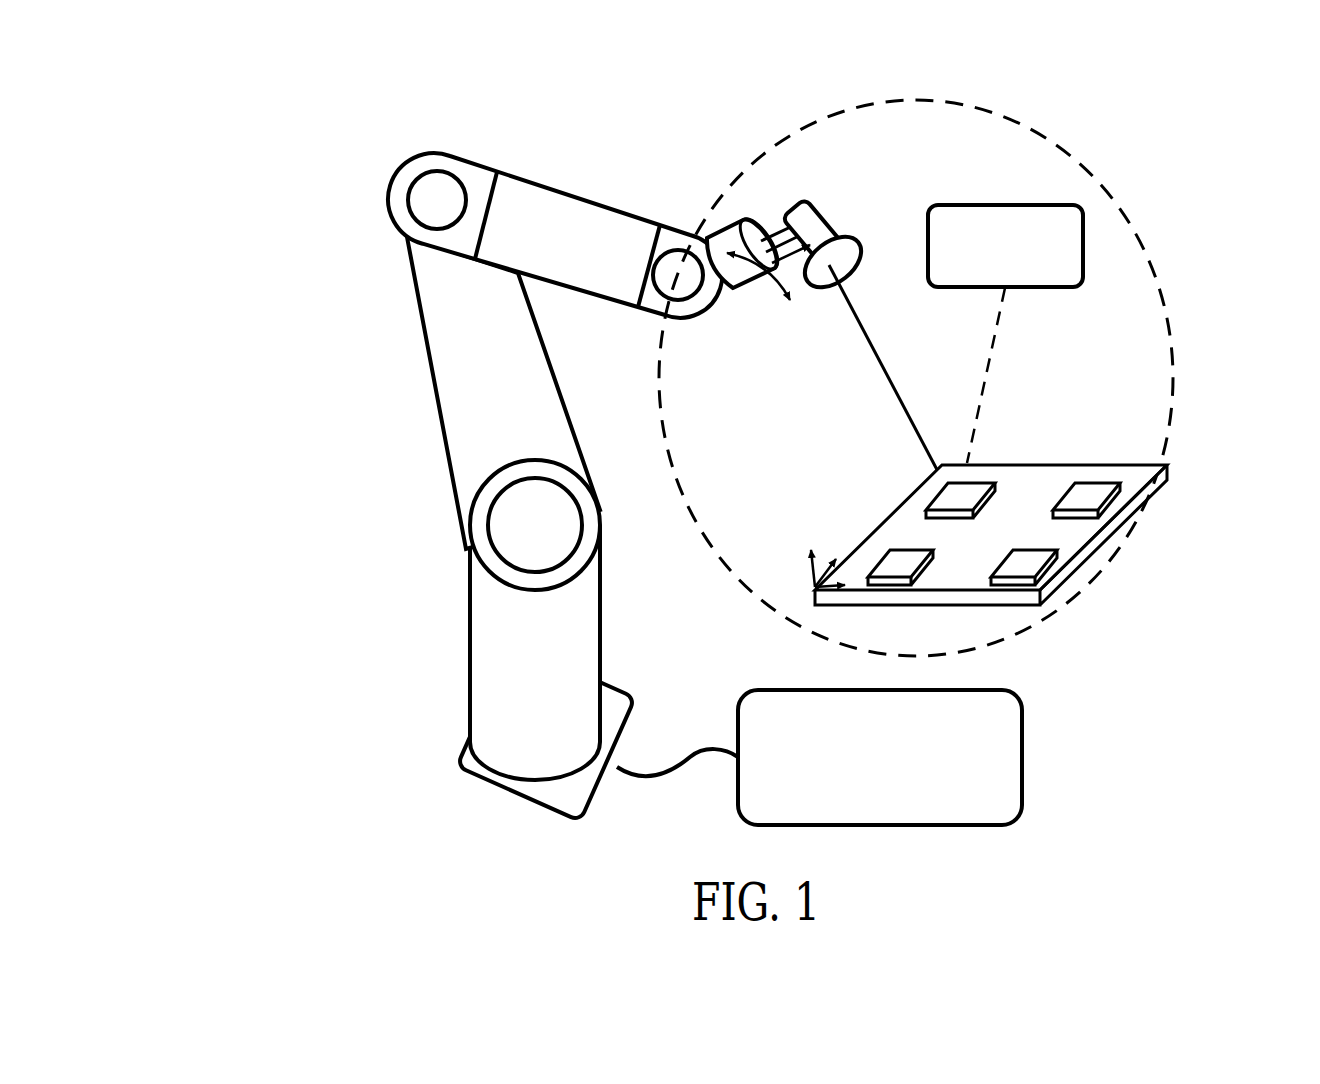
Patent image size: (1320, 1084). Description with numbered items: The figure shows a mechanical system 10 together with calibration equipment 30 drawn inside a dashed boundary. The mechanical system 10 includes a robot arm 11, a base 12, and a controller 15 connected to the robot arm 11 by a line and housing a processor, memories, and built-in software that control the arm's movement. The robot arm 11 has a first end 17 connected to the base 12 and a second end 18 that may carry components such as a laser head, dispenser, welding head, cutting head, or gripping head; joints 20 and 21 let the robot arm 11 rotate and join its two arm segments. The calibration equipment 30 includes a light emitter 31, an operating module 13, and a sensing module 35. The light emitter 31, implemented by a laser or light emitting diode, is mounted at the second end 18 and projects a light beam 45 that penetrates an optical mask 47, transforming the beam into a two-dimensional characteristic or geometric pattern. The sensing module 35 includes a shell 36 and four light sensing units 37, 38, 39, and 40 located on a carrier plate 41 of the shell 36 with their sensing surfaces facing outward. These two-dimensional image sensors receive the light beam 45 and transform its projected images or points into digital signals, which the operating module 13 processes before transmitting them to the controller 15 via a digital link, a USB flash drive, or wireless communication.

The mechanical system 10 is at (198, 113).
The robot arm 11 is at (412, 399).
The base 12 is at (463, 765).
The operating module 13 is at (1083, 247).
The controller 15 is at (1022, 757).
The first end 17 is at (517, 720).
The second end 18 is at (683, 290).
The joint 20 is at (518, 530).
The joint 21 is at (433, 200).
The calibration equipment 30 is at (1033, 154).
The light emitter 31 is at (850, 197).
The sensing module 35 is at (1033, 445).
The shell 36 is at (1135, 472).
The light sensing unit 37 is at (1027, 563).
The light sensing unit 38 is at (1093, 492).
The light sensing unit 39 is at (943, 503).
The light sensing unit 40 is at (893, 567).
The carrier plate 41 is at (998, 555).
The light beam 45 is at (893, 378).
The optical mask 47 is at (853, 246).